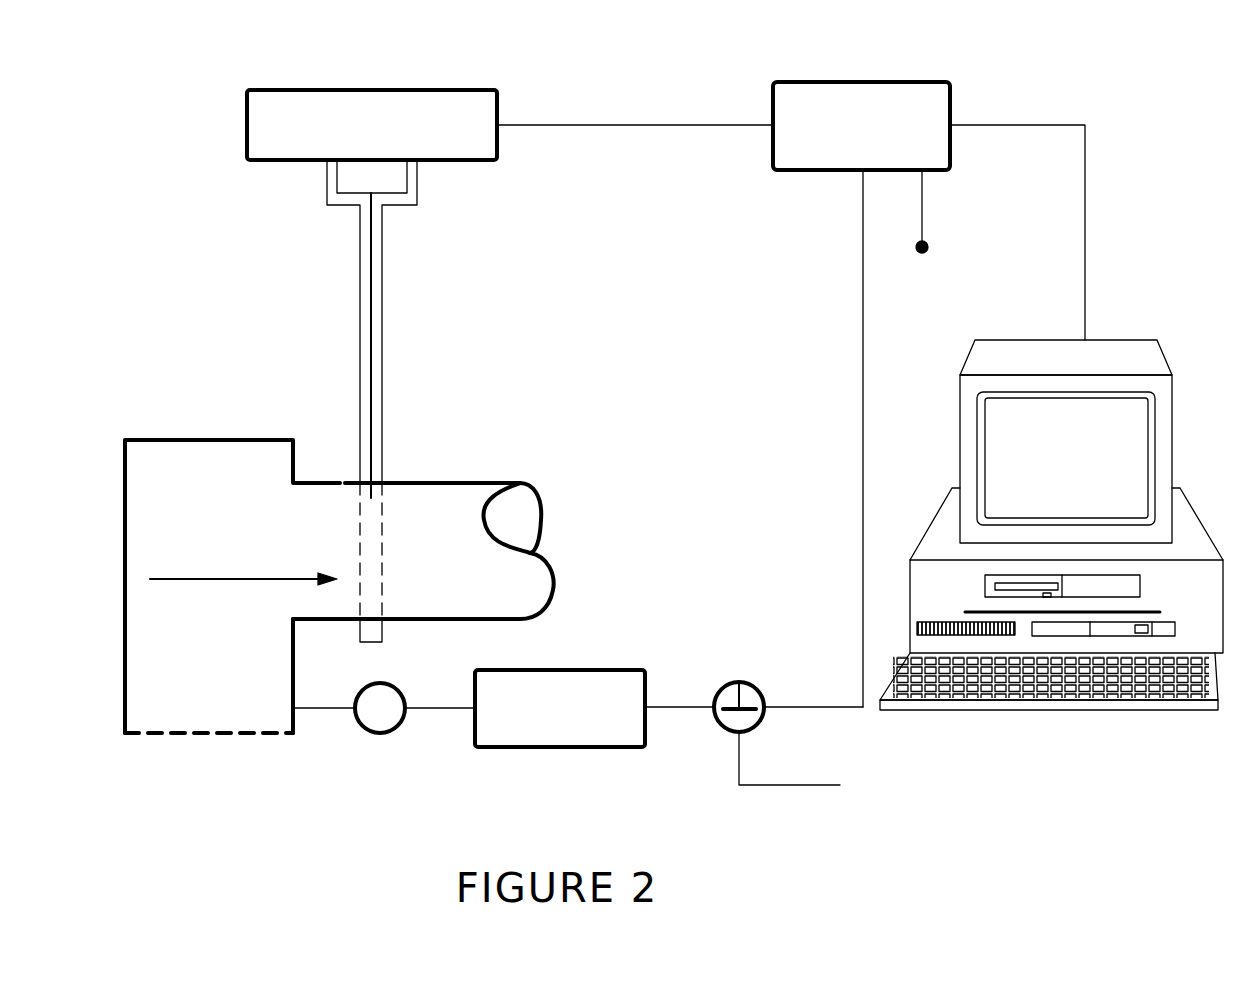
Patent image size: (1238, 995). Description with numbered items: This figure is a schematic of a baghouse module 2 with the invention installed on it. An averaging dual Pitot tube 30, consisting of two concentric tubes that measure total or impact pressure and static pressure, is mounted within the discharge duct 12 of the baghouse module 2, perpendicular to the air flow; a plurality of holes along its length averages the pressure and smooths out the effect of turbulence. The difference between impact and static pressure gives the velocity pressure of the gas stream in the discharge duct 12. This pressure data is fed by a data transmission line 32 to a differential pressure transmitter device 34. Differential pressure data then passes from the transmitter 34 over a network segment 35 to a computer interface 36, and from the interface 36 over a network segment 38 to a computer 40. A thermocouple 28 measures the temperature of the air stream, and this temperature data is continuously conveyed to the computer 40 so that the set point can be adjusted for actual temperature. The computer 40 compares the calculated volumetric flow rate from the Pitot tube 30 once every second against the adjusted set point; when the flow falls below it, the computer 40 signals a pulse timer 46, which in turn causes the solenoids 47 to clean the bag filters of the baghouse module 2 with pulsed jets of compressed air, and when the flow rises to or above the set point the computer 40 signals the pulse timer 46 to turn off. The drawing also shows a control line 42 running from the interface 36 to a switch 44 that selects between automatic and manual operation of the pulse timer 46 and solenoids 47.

The baghouse module 2 is at (225, 437).
The discharge duct 12 is at (432, 497).
The averaging dual Pitot tube 30 is at (368, 557).
The data transmission line 32 is at (330, 182).
The differential pressure transmitter device 34 is at (385, 100).
The network segment 35 is at (713, 125).
The computer interface 36 is at (918, 82).
The thermocouple 28 is at (922, 183).
The network segment 38 is at (1085, 252).
The computer 40 is at (1090, 352).
The control line 42 is at (863, 332).
The switch 44 is at (717, 727).
The pulse timer 46 is at (525, 683).
The solenoids 47 is at (380, 690).